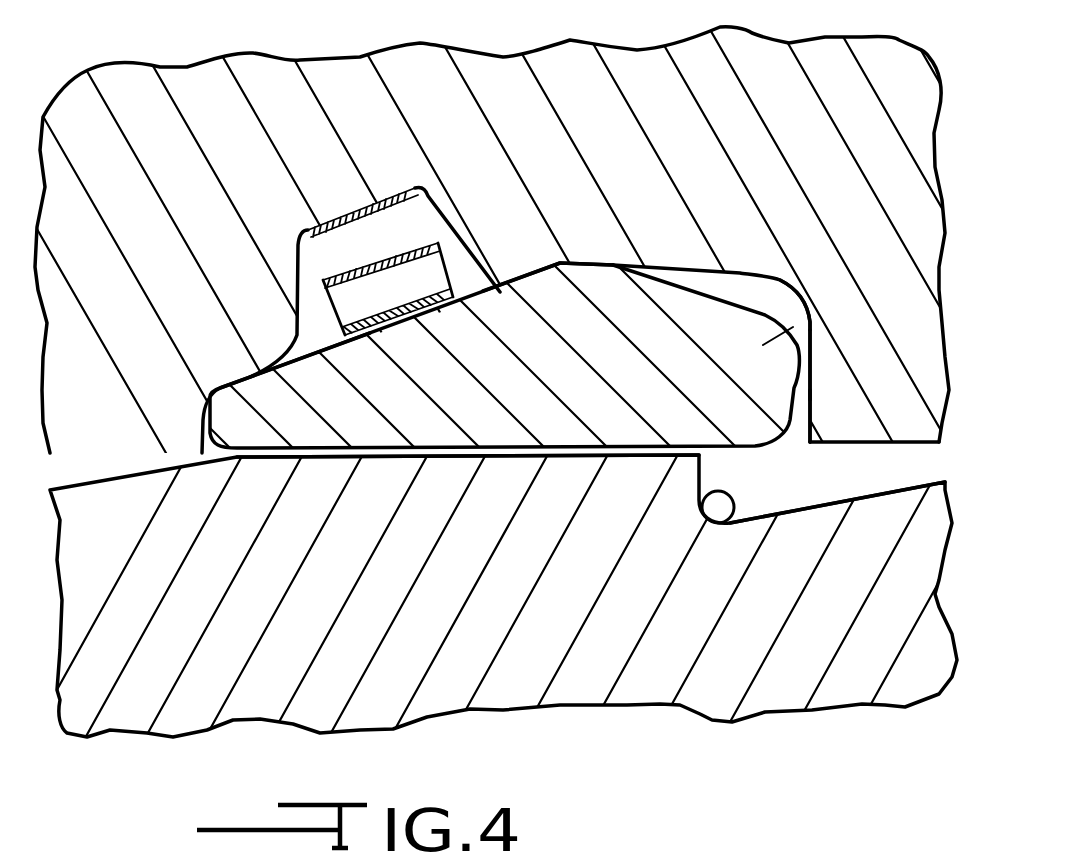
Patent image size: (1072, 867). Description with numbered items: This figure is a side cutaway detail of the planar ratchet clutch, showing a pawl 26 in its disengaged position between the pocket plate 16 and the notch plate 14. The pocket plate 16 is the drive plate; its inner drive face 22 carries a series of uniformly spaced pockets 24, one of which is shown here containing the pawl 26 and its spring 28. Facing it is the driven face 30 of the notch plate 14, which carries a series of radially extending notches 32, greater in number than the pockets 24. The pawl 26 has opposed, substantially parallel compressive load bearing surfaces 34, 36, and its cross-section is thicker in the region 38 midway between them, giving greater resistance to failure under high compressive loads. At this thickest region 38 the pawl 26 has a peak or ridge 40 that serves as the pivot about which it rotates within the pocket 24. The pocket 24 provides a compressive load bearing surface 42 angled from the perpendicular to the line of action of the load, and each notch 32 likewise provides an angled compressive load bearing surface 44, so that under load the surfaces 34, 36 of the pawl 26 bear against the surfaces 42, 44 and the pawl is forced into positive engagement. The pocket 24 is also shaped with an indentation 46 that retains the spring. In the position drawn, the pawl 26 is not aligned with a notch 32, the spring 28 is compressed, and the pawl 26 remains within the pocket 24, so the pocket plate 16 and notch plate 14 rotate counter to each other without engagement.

The notch plate 14 is at (523, 608).
The pocket plate 16 is at (536, 230).
The inner drive face 22 is at (940, 426).
The pocket 24 is at (820, 293).
The pawl 26 is at (914, 280).
The spring 28 is at (433, 229).
The driven face 30 is at (457, 510).
The notch 32 is at (897, 492).
The compressive load bearing surface 34 is at (929, 388).
The compressive load bearing surface 36 is at (228, 393).
The thickest region 38 is at (425, 334).
The peak or ridge 40 is at (587, 207).
The compressive load bearing surface 42 is at (927, 336).
The compressive load bearing surface 44 is at (689, 548).
The indentation 46 is at (343, 270).